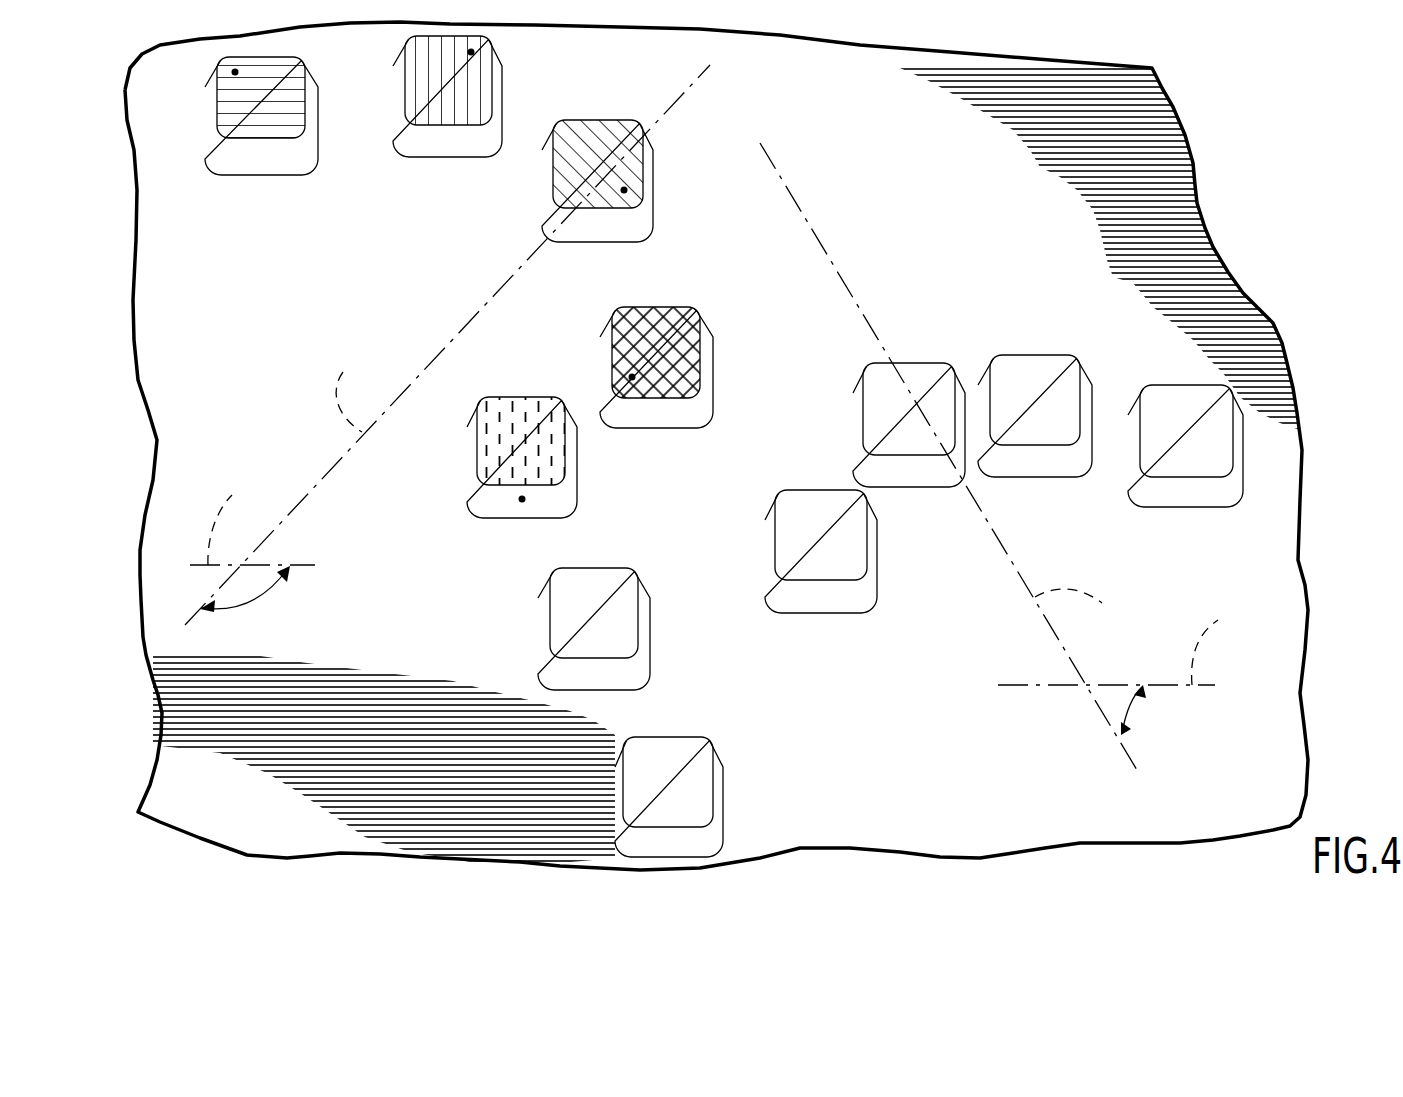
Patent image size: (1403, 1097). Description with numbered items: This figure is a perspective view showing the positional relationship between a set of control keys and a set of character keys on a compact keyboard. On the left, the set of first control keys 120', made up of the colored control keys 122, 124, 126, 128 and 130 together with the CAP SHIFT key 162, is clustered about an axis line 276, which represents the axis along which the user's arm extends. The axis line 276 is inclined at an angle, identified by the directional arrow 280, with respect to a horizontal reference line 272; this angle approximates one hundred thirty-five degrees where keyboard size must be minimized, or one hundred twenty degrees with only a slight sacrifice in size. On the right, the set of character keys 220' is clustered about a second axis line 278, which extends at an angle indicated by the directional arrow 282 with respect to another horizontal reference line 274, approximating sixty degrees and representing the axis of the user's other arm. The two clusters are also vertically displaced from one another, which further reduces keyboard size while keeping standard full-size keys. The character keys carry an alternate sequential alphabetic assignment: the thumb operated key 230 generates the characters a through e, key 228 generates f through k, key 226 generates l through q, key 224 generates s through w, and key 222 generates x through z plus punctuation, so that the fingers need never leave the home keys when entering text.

The set of first control keys 120' is at (447, 345).
The set of character keys 220' is at (950, 459).
The control key 122 is at (258, 176).
The control key 124 is at (444, 158).
The control key 126 is at (598, 243).
The control key 128 is at (665, 429).
The fifth control key 130 is at (520, 519).
The CAP SHIFT key 162 is at (651, 656).
The character key 222 is at (1207, 508).
The character key 224 is at (1063, 478).
The character key 226 is at (853, 432).
The character key 228 is at (878, 558).
The thumb operated key 230 is at (724, 820).
The horizontal reference line 272 is at (252, 514).
The horizontal reference line 274 is at (1134, 644).
The axis line 276 is at (347, 384).
The axis line 278 is at (1094, 608).
The directional arrow 280 is at (257, 597).
The directional arrow 282 is at (1136, 710).